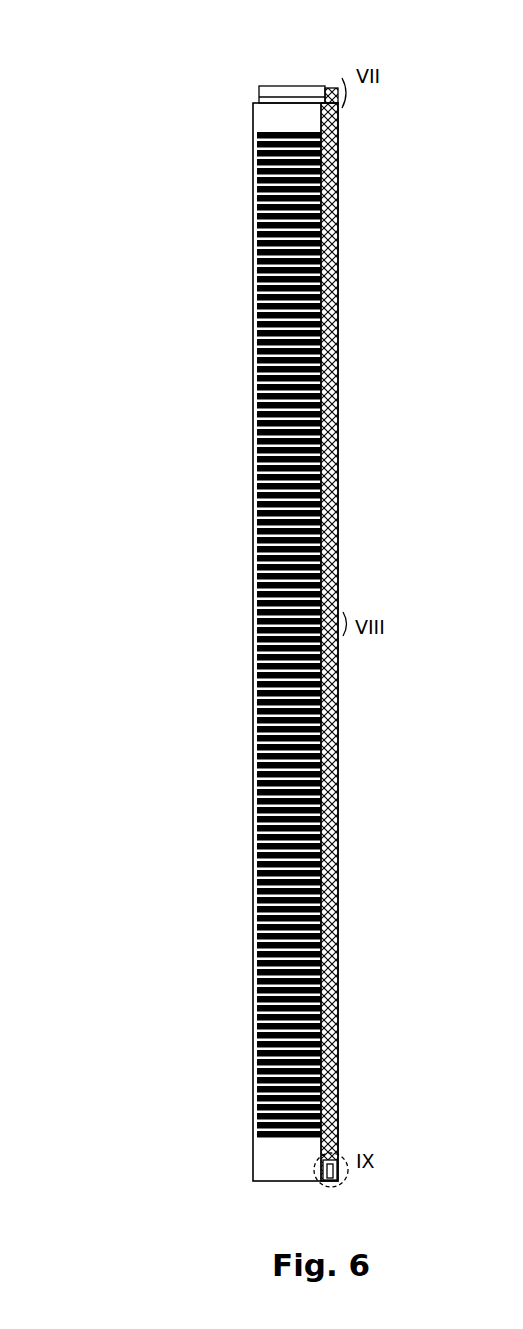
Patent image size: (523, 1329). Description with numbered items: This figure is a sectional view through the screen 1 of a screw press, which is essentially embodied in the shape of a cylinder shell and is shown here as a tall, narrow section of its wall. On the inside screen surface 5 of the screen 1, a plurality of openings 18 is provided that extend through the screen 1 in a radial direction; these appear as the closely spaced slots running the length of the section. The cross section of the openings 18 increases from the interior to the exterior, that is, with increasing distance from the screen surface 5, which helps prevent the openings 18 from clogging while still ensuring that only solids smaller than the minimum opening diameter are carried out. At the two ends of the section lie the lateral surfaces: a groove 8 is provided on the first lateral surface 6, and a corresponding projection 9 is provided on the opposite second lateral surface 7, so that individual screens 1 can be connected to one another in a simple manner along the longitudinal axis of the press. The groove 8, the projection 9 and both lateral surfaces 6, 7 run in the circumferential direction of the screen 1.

The screen 1 is at (188, 60).
The screen surface 5 is at (262, 1158).
The first lateral surface 6 is at (332, 1183).
The second lateral surface 7 is at (332, 90).
The groove 8 is at (324, 1184).
The projection 9 is at (322, 89).
The openings 18 is at (338, 780).